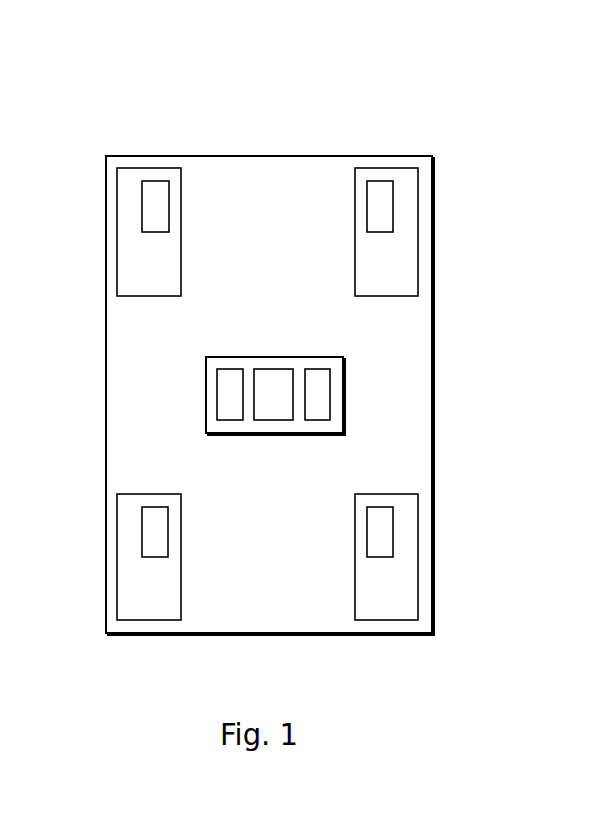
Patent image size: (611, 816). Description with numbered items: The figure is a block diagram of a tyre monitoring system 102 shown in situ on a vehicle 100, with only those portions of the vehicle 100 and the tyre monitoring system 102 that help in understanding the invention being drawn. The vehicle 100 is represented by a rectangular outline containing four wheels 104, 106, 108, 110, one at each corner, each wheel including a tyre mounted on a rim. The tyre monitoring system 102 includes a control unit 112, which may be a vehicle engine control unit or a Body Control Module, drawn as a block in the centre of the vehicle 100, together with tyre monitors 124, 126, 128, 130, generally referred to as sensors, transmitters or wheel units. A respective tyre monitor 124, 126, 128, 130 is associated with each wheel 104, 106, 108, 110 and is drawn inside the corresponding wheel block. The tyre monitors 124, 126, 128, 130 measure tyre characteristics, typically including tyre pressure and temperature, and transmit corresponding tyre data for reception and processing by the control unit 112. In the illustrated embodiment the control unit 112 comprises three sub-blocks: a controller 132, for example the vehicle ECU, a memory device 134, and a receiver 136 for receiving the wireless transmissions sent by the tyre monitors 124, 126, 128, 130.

The vehicle 100 is at (437, 366).
The tyre monitoring system 102 is at (497, 141).
The wheel 104 is at (130, 206).
The wheel 106 is at (404, 206).
The wheel 108 is at (405, 582).
The wheel 110 is at (130, 582).
The control unit 112 is at (206, 407).
The tyre monitor 124 is at (154, 218).
The tyre monitor 126 is at (380, 218).
The tyre monitor 128 is at (378, 532).
The tyre monitor 130 is at (156, 520).
The controller 132 is at (230, 382).
The memory device 134 is at (280, 382).
The receiver 136 is at (318, 382).